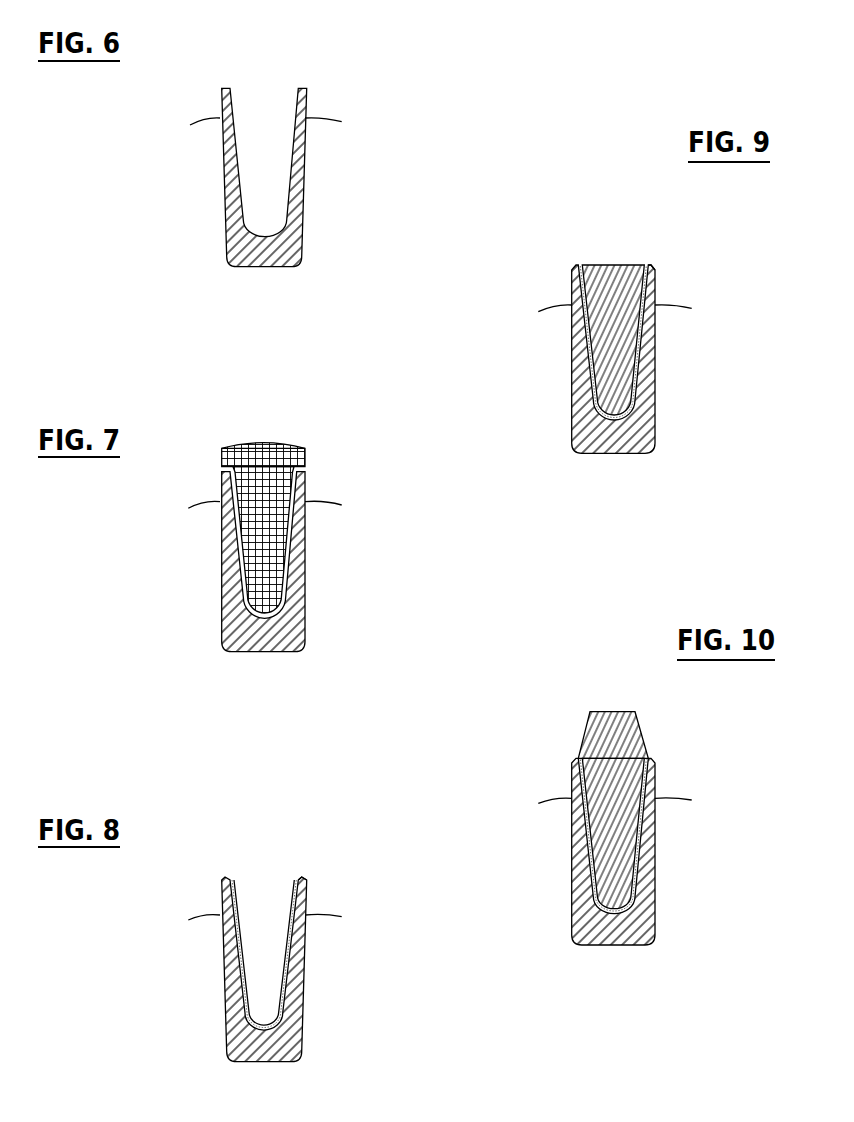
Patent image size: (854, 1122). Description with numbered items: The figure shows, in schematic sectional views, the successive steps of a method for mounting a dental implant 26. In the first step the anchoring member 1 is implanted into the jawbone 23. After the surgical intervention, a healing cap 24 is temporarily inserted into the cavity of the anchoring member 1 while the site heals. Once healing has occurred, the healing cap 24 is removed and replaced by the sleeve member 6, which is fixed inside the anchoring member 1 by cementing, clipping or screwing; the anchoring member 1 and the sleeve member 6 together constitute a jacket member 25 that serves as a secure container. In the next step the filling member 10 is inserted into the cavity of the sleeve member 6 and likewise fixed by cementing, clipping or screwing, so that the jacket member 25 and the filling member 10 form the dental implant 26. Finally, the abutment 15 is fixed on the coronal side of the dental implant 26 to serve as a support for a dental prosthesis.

In FIG. 6, the anchoring member 1 is at (238, 238).
In FIG. 7, the anchoring member 1 is at (238, 623).
In FIG. 8, the anchoring member 1 is at (238, 1033).
In FIG. 9, the anchoring member 1 is at (588, 425).
In FIG. 10, the anchoring member 1 is at (588, 917).
In FIG. 8, the sleeve member 6 is at (237, 938).
In FIG. 9, the sleeve member 6 is at (587, 330).
In FIG. 10, the sleeve member 6 is at (587, 820).
In FIG. 9, the filling member 10 is at (607, 293).
In FIG. 10, the filling member 10 is at (607, 783).
In FIG. 10, the abutment 15 is at (623, 743).
In FIG. 6, the jawbone 23 is at (315, 135).
In FIG. 7, the jawbone 23 is at (317, 518).
In FIG. 8, the jawbone 23 is at (317, 930).
In FIG. 9, the jawbone 23 is at (665, 322).
In FIG. 10, the jawbone 23 is at (665, 813).
In FIG. 7, the healing cap 24 is at (280, 473).
In FIG. 8, the jacket member 25 is at (312, 875).
In FIG. 9, the jacket member 25 is at (664, 260).
In FIG. 9, the dental implant 26 is at (562, 298).
In FIG. 10, the dental implant 26 is at (603, 789).